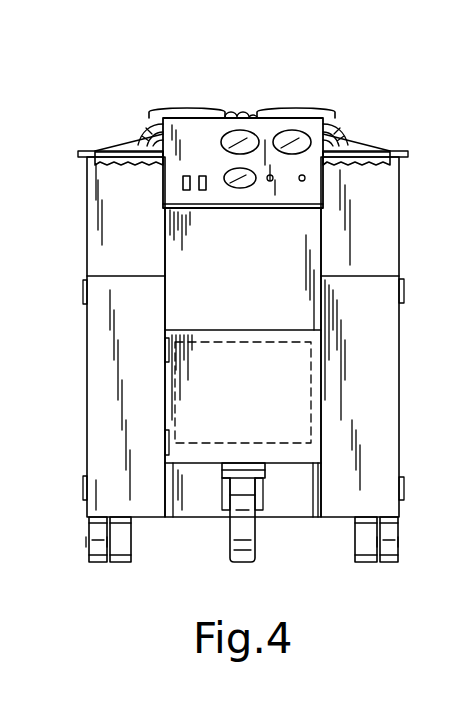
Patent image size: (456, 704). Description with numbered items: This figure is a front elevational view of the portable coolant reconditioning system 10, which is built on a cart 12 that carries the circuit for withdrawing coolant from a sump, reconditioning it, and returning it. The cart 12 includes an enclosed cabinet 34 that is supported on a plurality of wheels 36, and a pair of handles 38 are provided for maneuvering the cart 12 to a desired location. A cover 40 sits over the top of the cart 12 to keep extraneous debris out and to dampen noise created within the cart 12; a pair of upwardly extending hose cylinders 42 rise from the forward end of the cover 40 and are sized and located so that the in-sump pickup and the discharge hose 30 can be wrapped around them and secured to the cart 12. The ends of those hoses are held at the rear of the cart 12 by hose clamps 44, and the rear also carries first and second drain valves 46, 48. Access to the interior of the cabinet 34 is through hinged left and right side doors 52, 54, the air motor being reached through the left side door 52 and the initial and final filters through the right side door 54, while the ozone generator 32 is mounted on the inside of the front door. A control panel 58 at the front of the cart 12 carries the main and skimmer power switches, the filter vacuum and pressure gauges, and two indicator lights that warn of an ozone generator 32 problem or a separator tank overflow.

The portable coolant reconditioning system 10 is at (131, 64).
The cart 12 is at (152, 517).
The discharge hose 30 is at (388, 337).
The ozone generator 32 is at (312, 390).
The enclosed cabinet 34 is at (192, 517).
The wheels 36 is at (245, 563).
The handles 38 is at (112, 150).
The cover 40 is at (363, 142).
The hose cylinders 42 is at (205, 108).
The hose clamps 44 is at (388, 218).
The first drain valve 46 is at (455, 339).
The second drain valve 48 is at (388, 458).
The left side door 52 is at (455, 307).
The right side door 54 is at (87, 403).
The control panel 58 is at (163, 190).